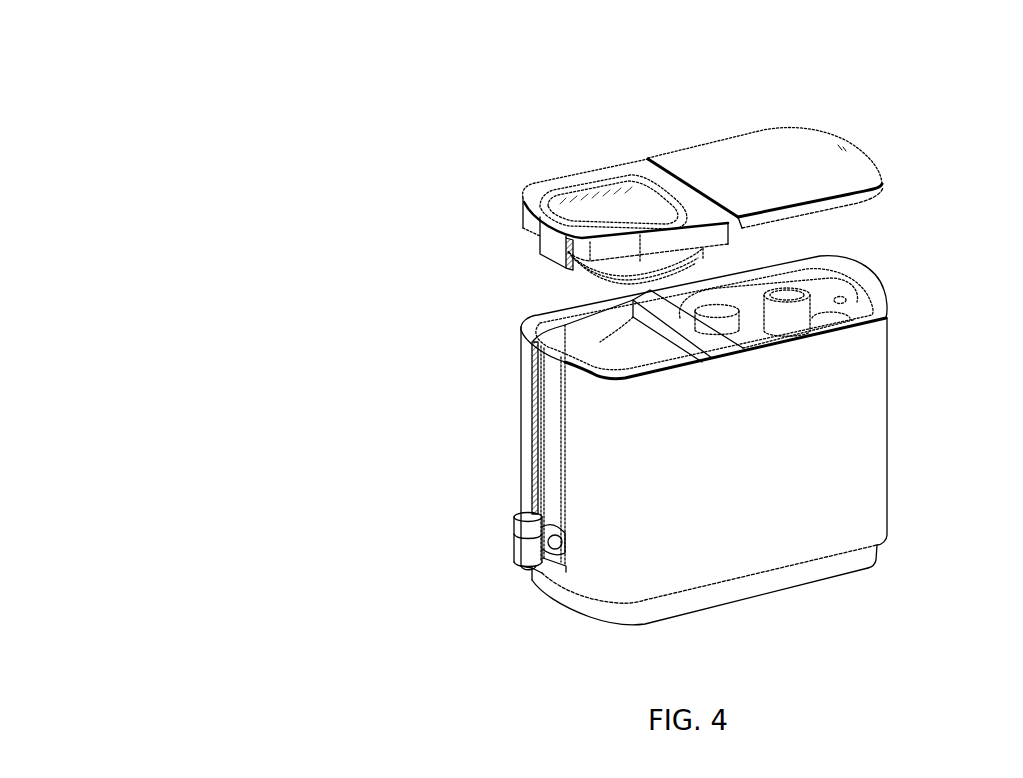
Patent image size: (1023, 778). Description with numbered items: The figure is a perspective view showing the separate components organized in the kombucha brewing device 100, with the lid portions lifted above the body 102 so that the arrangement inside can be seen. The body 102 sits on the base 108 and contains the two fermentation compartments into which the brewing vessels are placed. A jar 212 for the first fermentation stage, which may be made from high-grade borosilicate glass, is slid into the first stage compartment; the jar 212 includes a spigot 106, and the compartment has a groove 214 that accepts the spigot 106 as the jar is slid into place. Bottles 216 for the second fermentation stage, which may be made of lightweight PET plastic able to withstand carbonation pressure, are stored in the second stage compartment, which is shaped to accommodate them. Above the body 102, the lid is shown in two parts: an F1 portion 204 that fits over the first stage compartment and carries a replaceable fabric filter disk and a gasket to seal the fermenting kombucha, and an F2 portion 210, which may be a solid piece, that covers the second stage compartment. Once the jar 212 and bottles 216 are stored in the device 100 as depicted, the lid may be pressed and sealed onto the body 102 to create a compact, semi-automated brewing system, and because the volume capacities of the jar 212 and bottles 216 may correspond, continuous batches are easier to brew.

The kombucha brewing device 100 is at (265, 98).
The body 102 is at (882, 440).
The spigot 106 is at (512, 527).
The base 108 is at (790, 580).
The F1 portion 204 is at (505, 205).
The F2 portion 210 is at (842, 142).
The jar 212 is at (563, 333).
The groove 214 is at (550, 412).
The bottles 216 is at (803, 278).